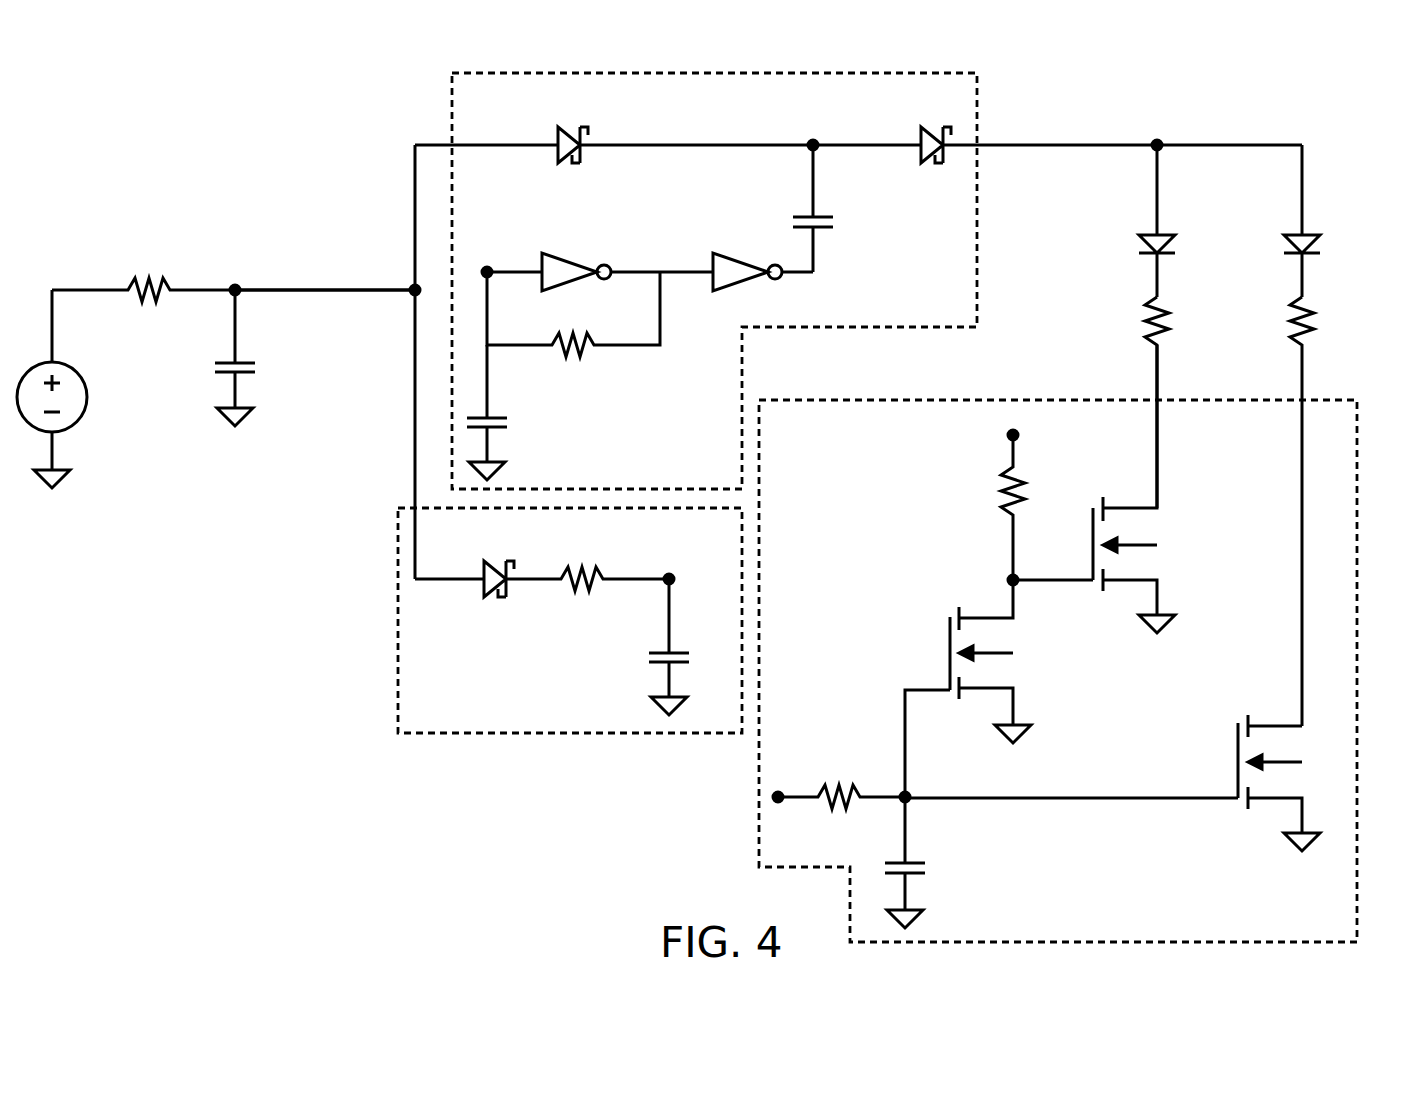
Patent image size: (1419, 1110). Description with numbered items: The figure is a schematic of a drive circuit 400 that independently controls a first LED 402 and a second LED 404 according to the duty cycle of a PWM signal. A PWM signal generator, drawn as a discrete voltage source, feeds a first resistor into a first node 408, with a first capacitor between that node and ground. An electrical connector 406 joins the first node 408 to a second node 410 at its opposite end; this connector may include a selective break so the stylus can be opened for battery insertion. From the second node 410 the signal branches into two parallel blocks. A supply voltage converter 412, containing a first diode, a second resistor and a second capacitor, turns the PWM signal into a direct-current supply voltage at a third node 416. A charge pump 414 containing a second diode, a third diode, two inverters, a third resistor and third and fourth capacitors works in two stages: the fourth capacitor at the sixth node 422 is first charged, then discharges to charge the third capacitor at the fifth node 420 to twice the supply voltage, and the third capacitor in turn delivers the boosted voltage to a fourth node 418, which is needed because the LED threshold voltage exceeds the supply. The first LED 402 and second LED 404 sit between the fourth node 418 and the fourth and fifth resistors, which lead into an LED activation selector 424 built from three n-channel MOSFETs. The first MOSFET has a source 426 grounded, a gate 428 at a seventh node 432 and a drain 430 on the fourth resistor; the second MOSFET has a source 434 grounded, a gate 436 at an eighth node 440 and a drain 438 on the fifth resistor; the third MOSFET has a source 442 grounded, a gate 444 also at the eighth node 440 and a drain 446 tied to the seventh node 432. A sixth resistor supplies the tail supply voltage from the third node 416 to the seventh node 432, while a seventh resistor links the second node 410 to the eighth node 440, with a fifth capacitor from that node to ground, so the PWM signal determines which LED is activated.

The drive circuit 400 is at (124, 116).
The first LED 402 is at (1172, 237).
The second LED 404 is at (1316, 237).
The electrical connector 406 is at (288, 292).
The first node 408 is at (237, 288).
The second node 410 is at (415, 290).
The supply voltage converter 412 is at (570, 620).
The charge pump 414 is at (714, 281).
The third node 416 is at (670, 582).
The fourth node 418 is at (1157, 145).
The fifth node 420 is at (813, 145).
The sixth node 422 is at (487, 270).
The LED activation selector 424 is at (1058, 643).
The source of first n-channel MOSFET M1 426 is at (1127, 582).
The gate of first n-channel MOSFET M1 428 is at (1093, 546).
The drain of first n-channel MOSFET M1 430 is at (1157, 505).
The seventh node 432 is at (1012, 578).
The source of second n-channel MOSFET M2 434 is at (1270, 800).
The gate of second n-channel MOSFET M2 436 is at (1238, 768).
The drain of second n-channel MOSFET M2 438 is at (1277, 722).
The eighth node 440 is at (906, 795).
The source of third n-channel MOSFET M3 442 is at (983, 690).
The gate of third n-channel MOSFET M3 444 is at (950, 656).
The drain of third n-channel MOSFET M3 446 is at (990, 617).